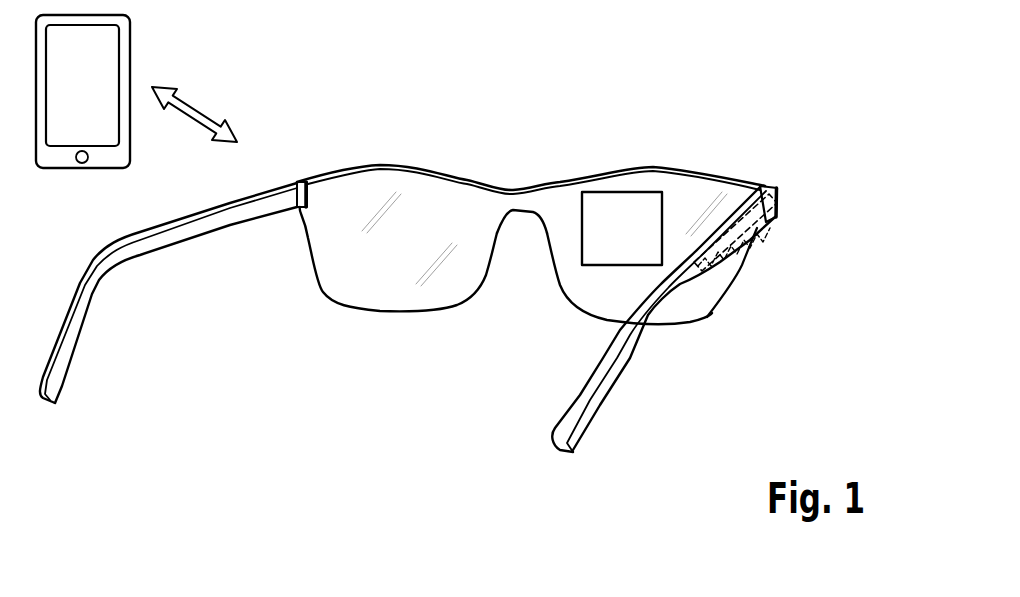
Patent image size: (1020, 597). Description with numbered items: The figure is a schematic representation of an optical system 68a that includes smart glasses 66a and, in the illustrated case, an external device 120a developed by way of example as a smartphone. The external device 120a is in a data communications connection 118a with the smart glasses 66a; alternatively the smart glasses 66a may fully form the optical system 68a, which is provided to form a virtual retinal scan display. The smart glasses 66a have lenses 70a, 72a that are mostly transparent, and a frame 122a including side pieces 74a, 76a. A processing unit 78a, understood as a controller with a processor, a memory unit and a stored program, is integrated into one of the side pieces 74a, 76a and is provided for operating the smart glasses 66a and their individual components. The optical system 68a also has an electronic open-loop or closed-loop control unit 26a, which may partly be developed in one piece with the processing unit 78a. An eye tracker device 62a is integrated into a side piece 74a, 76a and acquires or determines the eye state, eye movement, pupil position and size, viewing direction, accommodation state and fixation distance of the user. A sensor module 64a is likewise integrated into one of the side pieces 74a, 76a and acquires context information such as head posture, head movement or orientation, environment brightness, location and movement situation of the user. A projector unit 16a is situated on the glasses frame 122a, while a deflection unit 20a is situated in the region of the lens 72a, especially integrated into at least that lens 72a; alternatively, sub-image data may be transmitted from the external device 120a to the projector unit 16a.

The external device 120a is at (107, 52).
The data communications connection 118a is at (190, 108).
The frame 122a is at (277, 202).
The side piece 76a is at (190, 226).
The smart glasses 66a is at (673, 158).
The lens 70a is at (403, 203).
The lens 72a is at (693, 198).
The deflection unit 20a is at (625, 208).
The optical system 68a is at (810, 179).
The eye tracker device 62a is at (778, 224).
The side piece 74a is at (663, 319).
The sensor module 64a is at (713, 267).
The projector unit 16a is at (768, 272).
The open-loop or closed-loop control unit 26a is at (768, 272).
The processing unit 78a is at (750, 236).